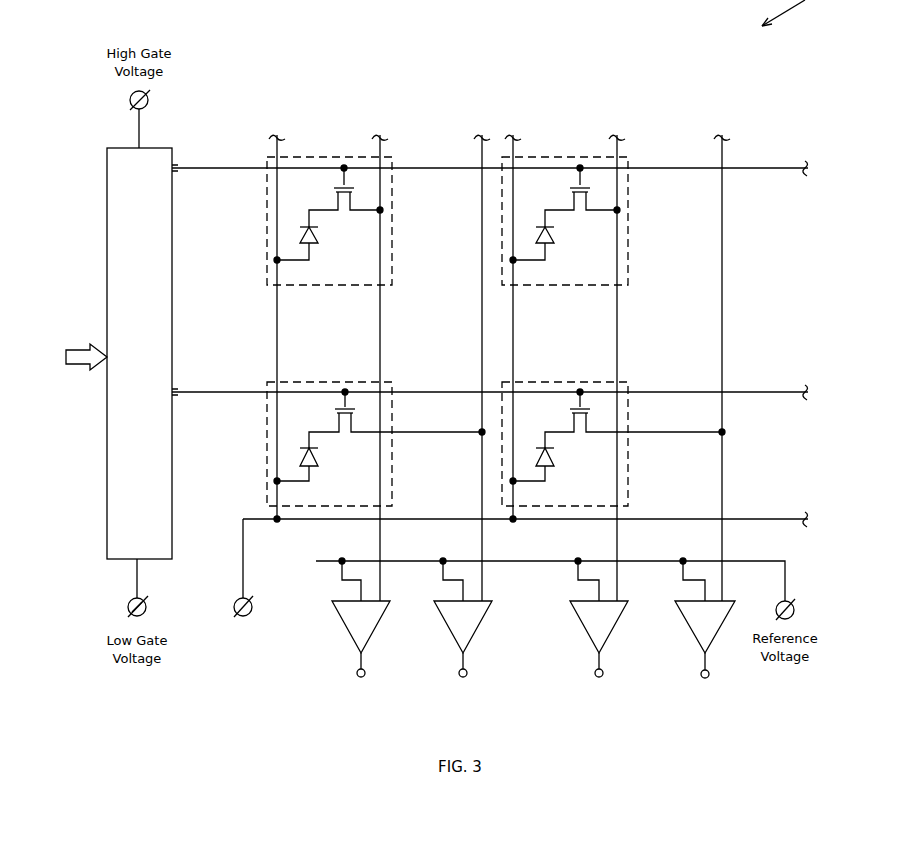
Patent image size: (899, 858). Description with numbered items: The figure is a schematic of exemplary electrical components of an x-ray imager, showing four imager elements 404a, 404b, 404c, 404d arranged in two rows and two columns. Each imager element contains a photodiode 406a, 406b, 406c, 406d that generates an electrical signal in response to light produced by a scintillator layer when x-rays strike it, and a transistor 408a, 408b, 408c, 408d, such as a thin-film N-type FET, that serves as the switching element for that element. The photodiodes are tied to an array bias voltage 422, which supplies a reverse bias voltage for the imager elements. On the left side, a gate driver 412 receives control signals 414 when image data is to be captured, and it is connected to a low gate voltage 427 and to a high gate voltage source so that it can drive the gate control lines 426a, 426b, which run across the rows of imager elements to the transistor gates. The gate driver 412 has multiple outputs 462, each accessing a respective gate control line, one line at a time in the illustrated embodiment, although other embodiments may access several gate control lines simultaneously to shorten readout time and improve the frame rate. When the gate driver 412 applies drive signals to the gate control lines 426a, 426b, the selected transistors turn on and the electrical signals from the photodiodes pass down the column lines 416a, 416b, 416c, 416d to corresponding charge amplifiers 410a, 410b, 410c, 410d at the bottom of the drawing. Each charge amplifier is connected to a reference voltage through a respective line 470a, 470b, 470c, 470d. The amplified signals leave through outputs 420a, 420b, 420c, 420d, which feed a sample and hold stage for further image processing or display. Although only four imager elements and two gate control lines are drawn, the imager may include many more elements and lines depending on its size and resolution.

The gate driver 412 is at (126, 365).
The control signals 414 is at (28, 334).
The outputs of the gate driver 462 is at (172, 168).
The low gate voltage 427 is at (107, 620).
The array bias voltage 422 is at (238, 598).
The gate control line 426a is at (770, 167).
The gate control line 426b is at (768, 391).
The imager element 404a is at (310, 285).
The imager element 404b is at (546, 285).
The imager element 404c is at (348, 381).
The imager element 404d is at (584, 381).
The photodiode 406a is at (318, 238).
The photodiode 406b is at (554, 238).
The photodiode 406c is at (318, 460).
The photodiode 406d is at (554, 460).
The transistor 408a is at (334, 195).
The transistor 408b is at (570, 195).
The transistor 408c is at (335, 417).
The transistor 408d is at (570, 417).
The line 416a is at (380, 543).
The line 416b is at (617, 543).
The line 416c is at (482, 543).
The line 416d is at (722, 543).
The line 470a is at (360, 592).
The line 470b is at (598, 592).
The line 470c is at (462, 592).
The line 470d is at (704, 590).
The charge amplifier 410a is at (347, 640).
The charge amplifier 410b is at (589, 637).
The charge amplifier 410c is at (452, 636).
The charge amplifier 410d is at (695, 637).
The output 420a is at (357, 673).
The output 420b is at (595, 673).
The output 420c is at (459, 673).
The output 420d is at (701, 675).